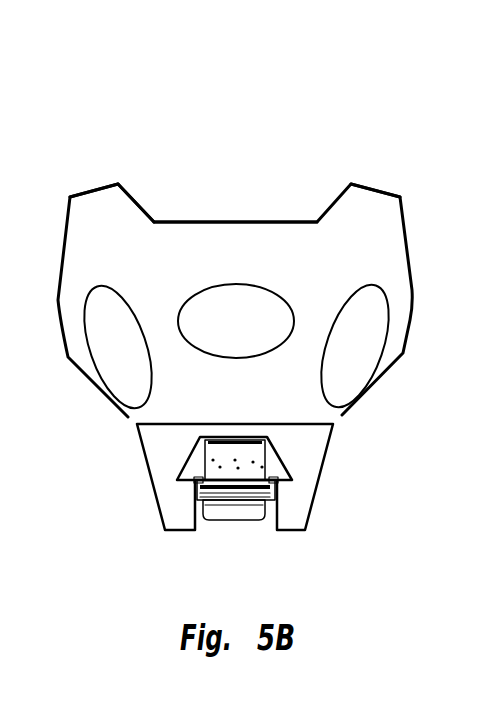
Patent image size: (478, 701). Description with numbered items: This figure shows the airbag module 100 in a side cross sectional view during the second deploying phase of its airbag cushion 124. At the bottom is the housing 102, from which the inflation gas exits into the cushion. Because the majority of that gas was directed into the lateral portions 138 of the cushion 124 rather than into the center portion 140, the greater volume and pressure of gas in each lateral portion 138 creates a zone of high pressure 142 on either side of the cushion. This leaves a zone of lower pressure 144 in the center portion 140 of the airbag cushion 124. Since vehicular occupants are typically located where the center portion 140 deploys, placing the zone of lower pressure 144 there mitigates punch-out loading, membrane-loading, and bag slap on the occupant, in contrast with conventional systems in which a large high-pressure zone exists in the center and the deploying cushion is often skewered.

The airbag module 100 is at (342, 507).
The housing 102 is at (323, 465).
The airbag cushion 124 is at (142, 197).
The lateral portions 138 is at (91, 188).
The center portion 140 is at (234, 222).
The zone of high pressure 142 is at (125, 382).
The zone of lower pressure 144 is at (205, 307).